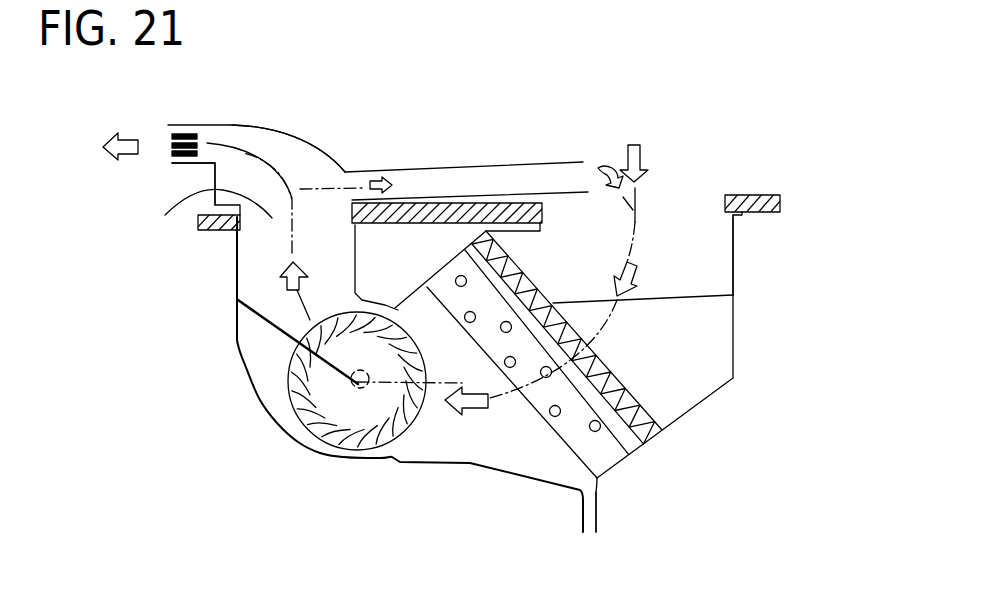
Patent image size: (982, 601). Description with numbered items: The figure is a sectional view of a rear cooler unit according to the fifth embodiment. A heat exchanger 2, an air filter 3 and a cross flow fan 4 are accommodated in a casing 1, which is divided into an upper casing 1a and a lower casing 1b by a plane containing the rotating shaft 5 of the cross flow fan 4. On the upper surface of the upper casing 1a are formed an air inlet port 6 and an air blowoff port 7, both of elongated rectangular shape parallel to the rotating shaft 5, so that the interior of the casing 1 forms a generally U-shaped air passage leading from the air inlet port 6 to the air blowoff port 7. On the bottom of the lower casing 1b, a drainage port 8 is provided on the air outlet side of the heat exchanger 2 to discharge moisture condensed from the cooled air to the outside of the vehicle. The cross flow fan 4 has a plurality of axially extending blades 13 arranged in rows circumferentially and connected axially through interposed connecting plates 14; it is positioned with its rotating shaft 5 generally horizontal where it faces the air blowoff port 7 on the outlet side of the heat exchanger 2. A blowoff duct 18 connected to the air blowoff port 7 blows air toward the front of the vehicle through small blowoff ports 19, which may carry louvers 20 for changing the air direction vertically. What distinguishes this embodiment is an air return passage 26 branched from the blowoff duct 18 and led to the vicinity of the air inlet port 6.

The casing 1 is at (815, 247).
The upper casing 1a is at (733, 263).
The lower casing 1b is at (733, 312).
The heat exchanger 2 is at (555, 437).
The air filter 3 is at (645, 420).
The cross flow fan 4 is at (344, 455).
The rotating shaft 5 is at (345, 395).
The air inlet port 6 is at (662, 213).
The air blowoff port 7 is at (213, 217).
The drainage port 8 is at (598, 514).
The blades 13 is at (297, 420).
The connecting plates 14 is at (287, 394).
The blowoff duct 18 is at (287, 138).
The small blowoff ports 19 is at (191, 122).
The louvers 20 is at (187, 158).
The air return passage 26 is at (456, 165).